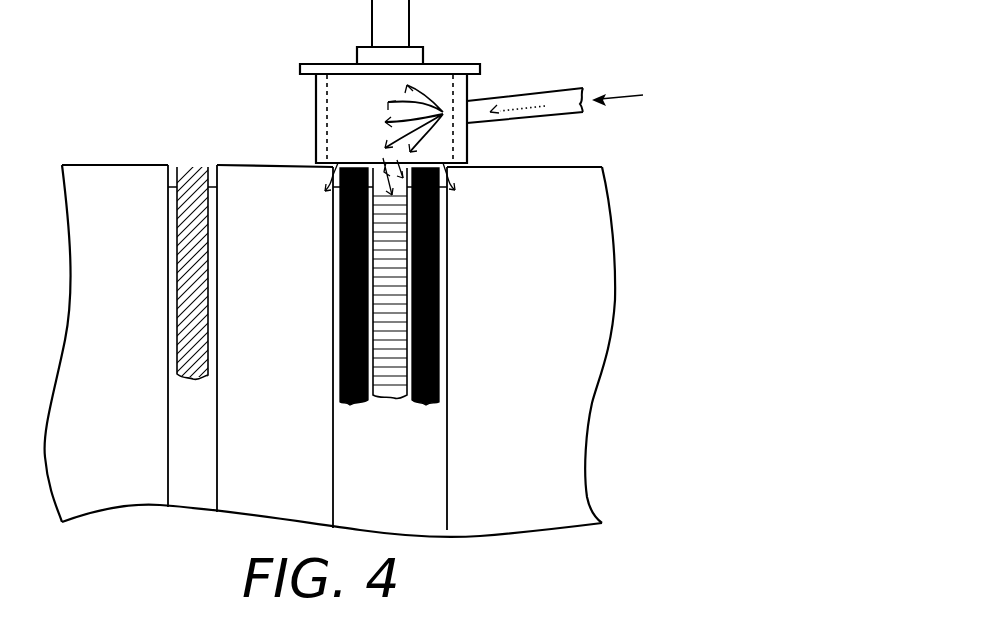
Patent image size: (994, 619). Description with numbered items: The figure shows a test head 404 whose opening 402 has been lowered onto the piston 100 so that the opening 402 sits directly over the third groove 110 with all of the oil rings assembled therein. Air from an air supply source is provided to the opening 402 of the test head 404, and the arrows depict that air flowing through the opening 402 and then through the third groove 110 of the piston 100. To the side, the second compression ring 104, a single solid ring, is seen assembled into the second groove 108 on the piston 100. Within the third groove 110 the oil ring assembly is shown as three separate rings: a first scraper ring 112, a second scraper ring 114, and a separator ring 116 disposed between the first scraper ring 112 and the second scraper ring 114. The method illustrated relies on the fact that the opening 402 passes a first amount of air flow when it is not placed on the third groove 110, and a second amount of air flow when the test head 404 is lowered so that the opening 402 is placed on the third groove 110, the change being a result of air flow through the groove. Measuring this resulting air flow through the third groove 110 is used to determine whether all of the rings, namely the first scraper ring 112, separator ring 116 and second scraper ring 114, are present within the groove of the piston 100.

The piston 100 is at (588, 257).
The second compression ring 104 is at (191, 181).
The second groove 108 is at (193, 447).
The third groove 110 is at (364, 488).
The first scraper ring 112 is at (355, 399).
The second scraper ring 114 is at (428, 404).
The separator ring 116 is at (389, 382).
The opening 402 is at (356, 127).
The test head 404 is at (447, 64).